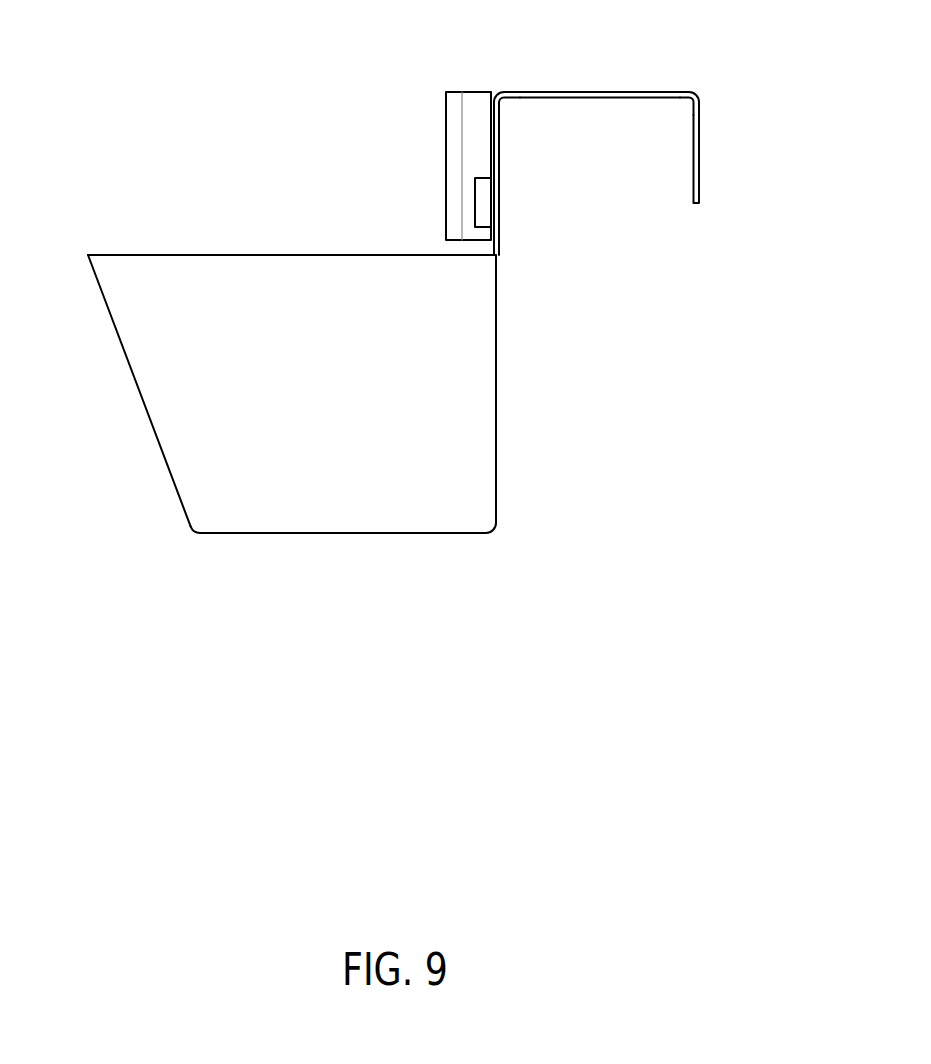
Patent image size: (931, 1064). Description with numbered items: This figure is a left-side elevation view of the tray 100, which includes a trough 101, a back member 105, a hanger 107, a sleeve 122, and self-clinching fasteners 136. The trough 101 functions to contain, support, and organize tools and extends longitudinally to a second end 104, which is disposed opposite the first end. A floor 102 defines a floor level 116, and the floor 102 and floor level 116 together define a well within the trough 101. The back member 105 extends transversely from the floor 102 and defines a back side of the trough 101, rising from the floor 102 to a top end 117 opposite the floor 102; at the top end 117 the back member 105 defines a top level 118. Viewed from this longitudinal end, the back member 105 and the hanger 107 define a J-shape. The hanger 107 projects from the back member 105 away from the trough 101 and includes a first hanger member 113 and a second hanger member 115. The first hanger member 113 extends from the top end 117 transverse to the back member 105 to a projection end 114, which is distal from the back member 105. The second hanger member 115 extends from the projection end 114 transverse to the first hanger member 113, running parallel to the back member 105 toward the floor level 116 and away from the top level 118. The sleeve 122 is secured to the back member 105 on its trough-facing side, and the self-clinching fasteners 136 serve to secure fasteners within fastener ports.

The tray 100 is at (82, 70).
The trough 101 is at (129, 419).
The floor 102 is at (277, 537).
The second end 104 is at (118, 303).
The back member 105 is at (497, 349).
The hanger 107 is at (737, 122).
The first hanger member 113 is at (592, 95).
The projection end 114 is at (697, 93).
The second hanger member 115 is at (697, 172).
The floor level 116 is at (404, 533).
The top end 117 is at (505, 99).
The top level 118 is at (496, 91).
The sleeve 122 is at (431, 116).
The self-clinching fasteners 136 is at (483, 177).